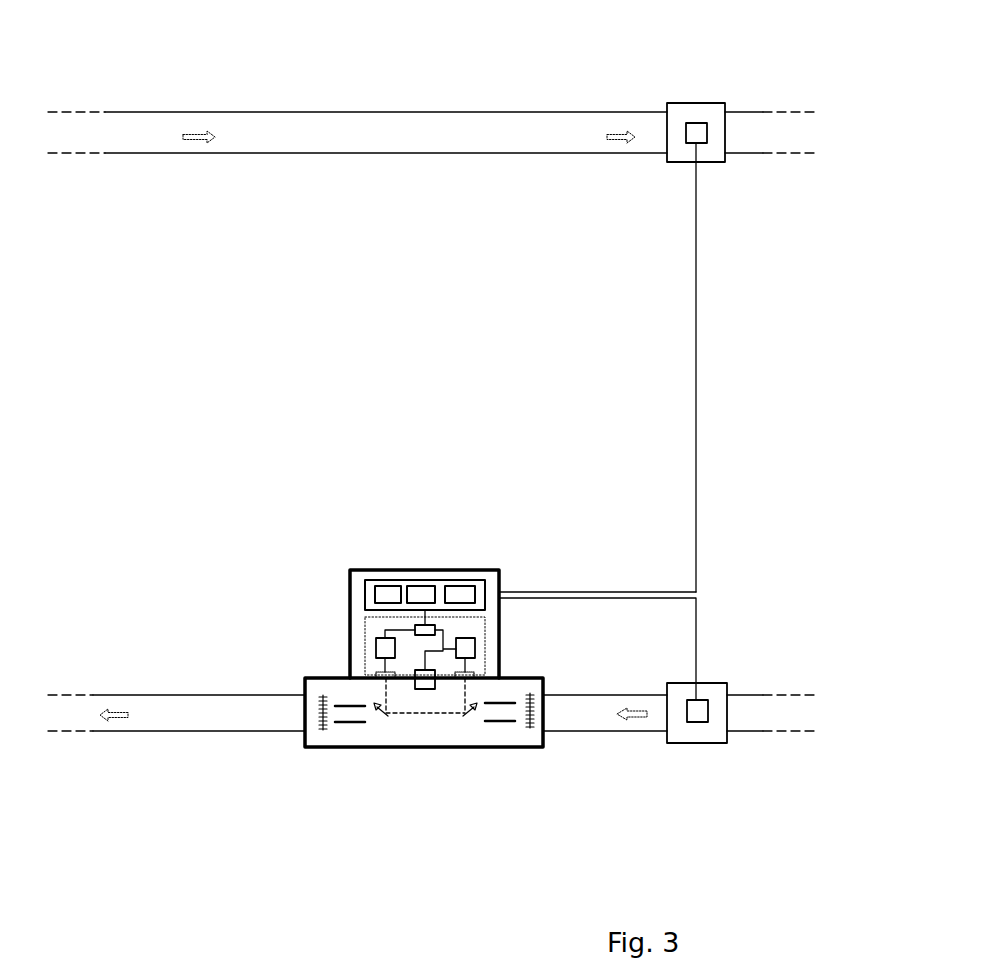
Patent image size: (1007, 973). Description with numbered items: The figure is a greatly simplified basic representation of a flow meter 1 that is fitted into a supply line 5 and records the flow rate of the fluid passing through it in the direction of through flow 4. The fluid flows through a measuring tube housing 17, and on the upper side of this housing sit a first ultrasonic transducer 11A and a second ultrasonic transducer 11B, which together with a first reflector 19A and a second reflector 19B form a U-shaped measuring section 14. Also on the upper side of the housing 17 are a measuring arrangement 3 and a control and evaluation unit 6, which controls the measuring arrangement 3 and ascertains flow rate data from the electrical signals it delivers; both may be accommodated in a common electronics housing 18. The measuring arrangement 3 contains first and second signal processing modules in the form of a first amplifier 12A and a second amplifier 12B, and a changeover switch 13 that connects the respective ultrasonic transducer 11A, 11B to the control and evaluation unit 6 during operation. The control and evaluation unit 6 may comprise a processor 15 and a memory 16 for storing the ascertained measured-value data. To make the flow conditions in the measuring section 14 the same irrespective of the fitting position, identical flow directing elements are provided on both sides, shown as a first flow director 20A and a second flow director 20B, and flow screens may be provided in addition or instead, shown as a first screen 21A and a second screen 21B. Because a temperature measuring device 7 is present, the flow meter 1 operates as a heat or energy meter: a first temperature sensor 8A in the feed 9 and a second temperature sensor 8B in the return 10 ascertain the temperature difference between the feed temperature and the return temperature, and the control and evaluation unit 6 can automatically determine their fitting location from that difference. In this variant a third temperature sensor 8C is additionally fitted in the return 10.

The flow meter 1 is at (422, 557).
The measuring arrangement 3 is at (485, 623).
The direction of through flow 4 is at (640, 718).
The supply line 5 is at (193, 695).
The control and evaluation unit 6 is at (365, 587).
The temperature measuring device 7 is at (458, 590).
The first temperature sensor 8A is at (700, 127).
The second temperature sensor 8B is at (697, 722).
The third temperature sensor 8C is at (428, 688).
The feed 9 is at (250, 120).
The return 10 is at (195, 722).
The first ultrasonic transducer 11A is at (377, 675).
The second ultrasonic transducer 11B is at (473, 674).
The first amplifier 12A is at (383, 650).
The second amplifier 12B is at (470, 647).
The changeover switch 13 is at (413, 628).
The measuring section 14 is at (428, 715).
The processor 15 is at (428, 590).
The memory 16 is at (392, 590).
The housing 17 is at (353, 748).
The housing 18 is at (500, 587).
The first reflector 19A is at (386, 718).
The second reflector 19B is at (465, 717).
The first flow director 20A is at (345, 723).
The second flow director 20B is at (507, 723).
The first screen 21A is at (320, 722).
The second screen 21B is at (535, 713).